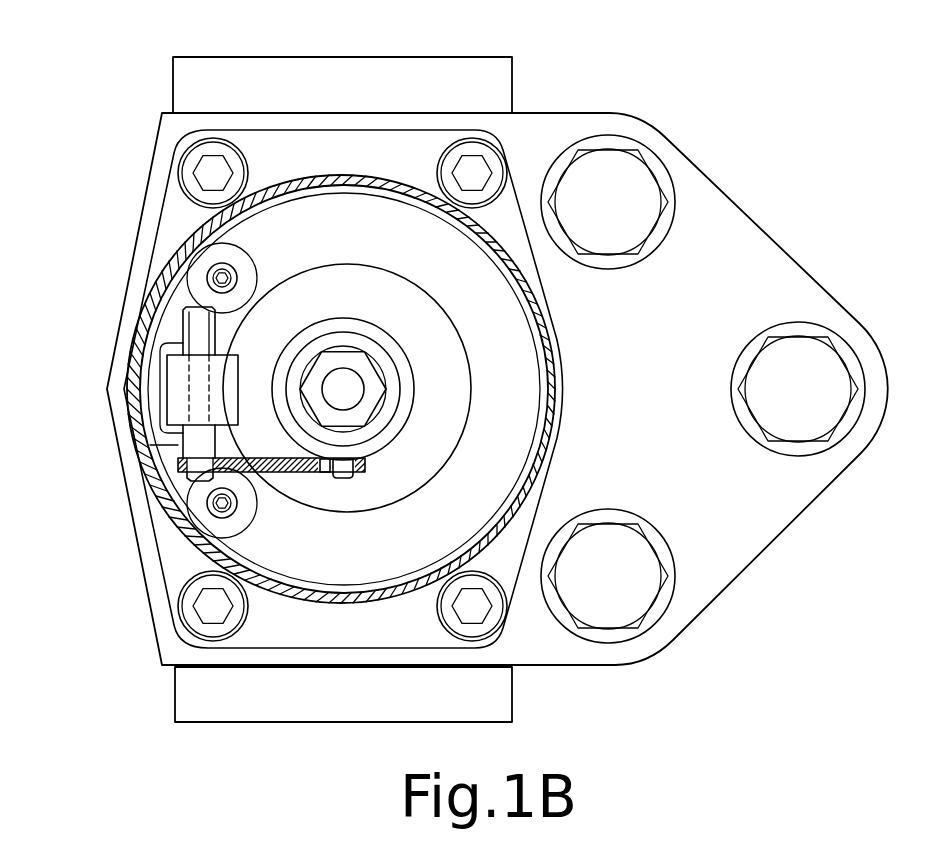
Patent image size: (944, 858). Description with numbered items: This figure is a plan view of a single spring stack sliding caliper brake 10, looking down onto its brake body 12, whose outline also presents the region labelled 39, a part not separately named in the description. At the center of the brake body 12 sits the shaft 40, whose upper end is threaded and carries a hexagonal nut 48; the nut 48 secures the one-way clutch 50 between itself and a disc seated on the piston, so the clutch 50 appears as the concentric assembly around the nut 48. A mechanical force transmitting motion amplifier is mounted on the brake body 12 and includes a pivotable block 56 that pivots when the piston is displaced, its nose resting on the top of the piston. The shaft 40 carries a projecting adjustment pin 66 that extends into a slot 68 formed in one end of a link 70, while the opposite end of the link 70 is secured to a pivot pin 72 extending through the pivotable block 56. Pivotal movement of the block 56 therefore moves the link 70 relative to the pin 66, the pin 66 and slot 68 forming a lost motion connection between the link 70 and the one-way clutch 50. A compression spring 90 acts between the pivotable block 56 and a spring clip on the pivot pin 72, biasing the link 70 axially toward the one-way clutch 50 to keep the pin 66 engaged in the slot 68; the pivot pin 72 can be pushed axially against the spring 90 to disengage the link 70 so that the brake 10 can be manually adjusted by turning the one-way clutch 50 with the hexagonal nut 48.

The single spring stack sliding caliper brake 10 is at (693, 99).
The brake body 12 is at (288, 93).
The mounting flange 39 is at (664, 398).
The shaft 40 is at (347, 385).
The hexagonal nut 48 is at (325, 362).
The one-way clutch 50 is at (450, 421).
The pivotable block 56 is at (177, 372).
The adjustment pin 66 is at (350, 472).
The slot 68 is at (322, 472).
The link 70 is at (237, 473).
The pivot pin 72 is at (203, 452).
The compression spring 90 is at (183, 336).